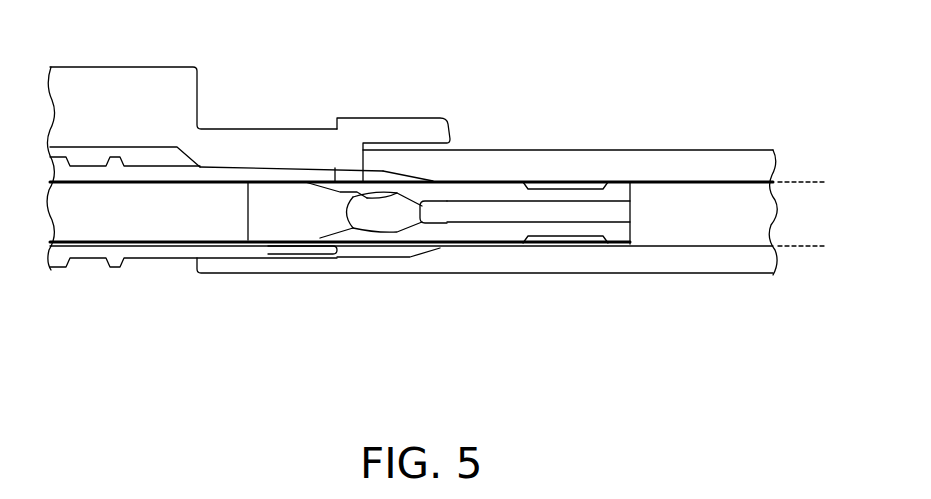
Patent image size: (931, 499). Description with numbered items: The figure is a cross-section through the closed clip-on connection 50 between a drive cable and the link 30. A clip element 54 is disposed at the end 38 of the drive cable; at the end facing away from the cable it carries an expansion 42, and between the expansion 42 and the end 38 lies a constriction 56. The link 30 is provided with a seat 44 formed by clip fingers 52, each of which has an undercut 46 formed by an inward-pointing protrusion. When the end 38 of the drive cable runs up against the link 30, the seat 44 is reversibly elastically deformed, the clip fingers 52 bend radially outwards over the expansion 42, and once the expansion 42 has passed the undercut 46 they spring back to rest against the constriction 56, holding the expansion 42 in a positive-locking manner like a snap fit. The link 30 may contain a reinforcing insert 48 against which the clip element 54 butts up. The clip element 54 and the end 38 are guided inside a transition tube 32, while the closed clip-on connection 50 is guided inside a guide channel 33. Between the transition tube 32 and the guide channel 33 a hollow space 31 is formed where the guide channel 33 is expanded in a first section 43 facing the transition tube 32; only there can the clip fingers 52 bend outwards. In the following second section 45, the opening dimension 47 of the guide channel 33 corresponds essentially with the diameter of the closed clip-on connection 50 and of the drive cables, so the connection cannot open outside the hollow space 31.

The link 30 is at (508, 166).
The hollow space 31 is at (345, 175).
The transition tube 32 is at (225, 168).
The guide channel 33 is at (690, 179).
The end of the drive cable 38 is at (157, 224).
The expansion 42 is at (424, 169).
The first section 43 is at (394, 214).
The seat 44 is at (360, 183).
The second section 45 is at (569, 248).
The undercut 46 is at (361, 237).
The opening dimension 47 is at (803, 153).
The reinforcing insert 48 is at (597, 215).
The clip-on connection 50 is at (448, 122).
The clip fingers 52 is at (413, 247).
The clip element 54 is at (277, 230).
The constriction 56 is at (355, 220).